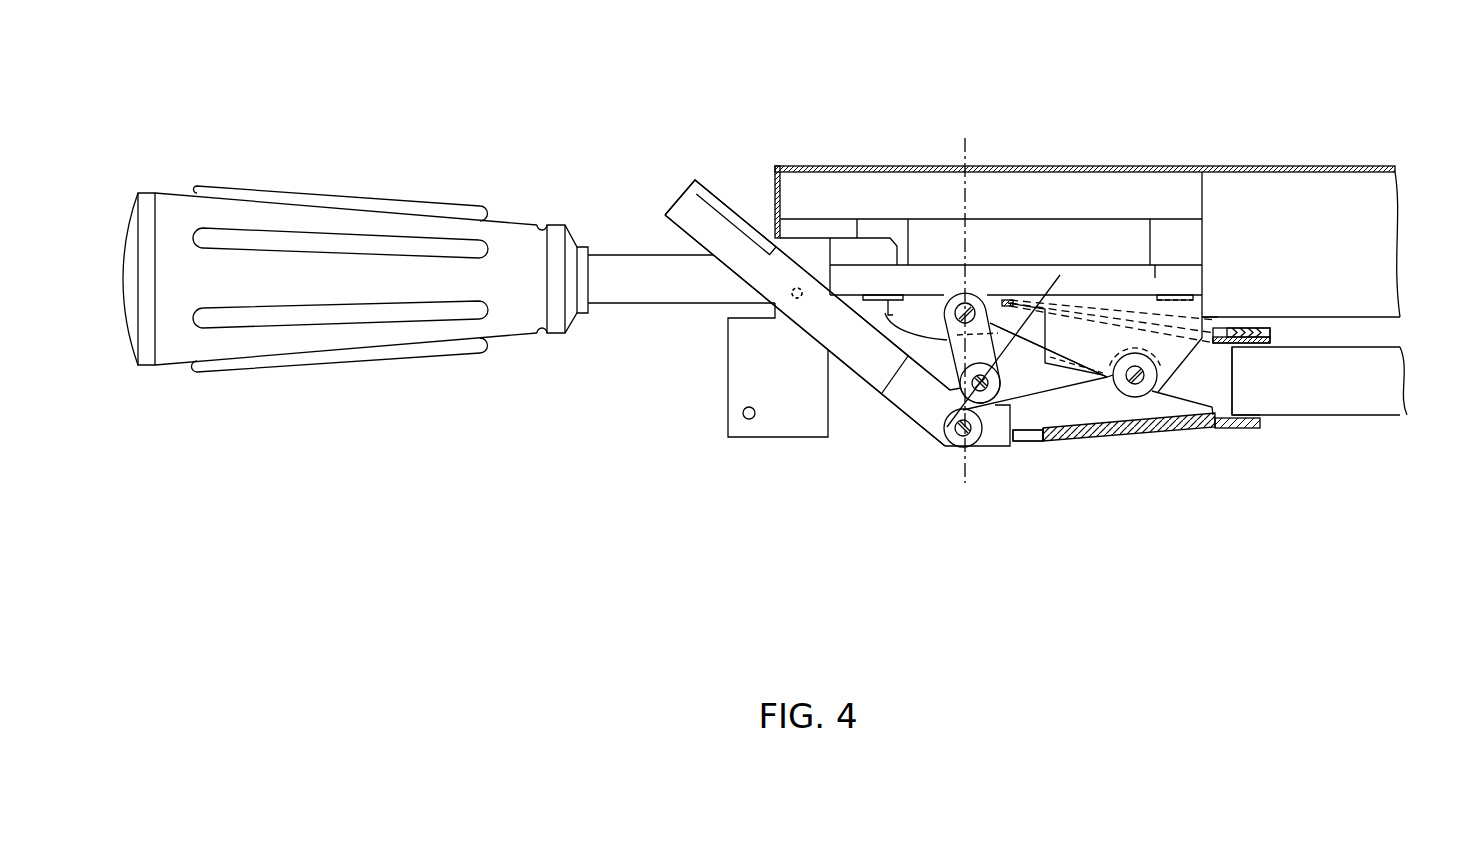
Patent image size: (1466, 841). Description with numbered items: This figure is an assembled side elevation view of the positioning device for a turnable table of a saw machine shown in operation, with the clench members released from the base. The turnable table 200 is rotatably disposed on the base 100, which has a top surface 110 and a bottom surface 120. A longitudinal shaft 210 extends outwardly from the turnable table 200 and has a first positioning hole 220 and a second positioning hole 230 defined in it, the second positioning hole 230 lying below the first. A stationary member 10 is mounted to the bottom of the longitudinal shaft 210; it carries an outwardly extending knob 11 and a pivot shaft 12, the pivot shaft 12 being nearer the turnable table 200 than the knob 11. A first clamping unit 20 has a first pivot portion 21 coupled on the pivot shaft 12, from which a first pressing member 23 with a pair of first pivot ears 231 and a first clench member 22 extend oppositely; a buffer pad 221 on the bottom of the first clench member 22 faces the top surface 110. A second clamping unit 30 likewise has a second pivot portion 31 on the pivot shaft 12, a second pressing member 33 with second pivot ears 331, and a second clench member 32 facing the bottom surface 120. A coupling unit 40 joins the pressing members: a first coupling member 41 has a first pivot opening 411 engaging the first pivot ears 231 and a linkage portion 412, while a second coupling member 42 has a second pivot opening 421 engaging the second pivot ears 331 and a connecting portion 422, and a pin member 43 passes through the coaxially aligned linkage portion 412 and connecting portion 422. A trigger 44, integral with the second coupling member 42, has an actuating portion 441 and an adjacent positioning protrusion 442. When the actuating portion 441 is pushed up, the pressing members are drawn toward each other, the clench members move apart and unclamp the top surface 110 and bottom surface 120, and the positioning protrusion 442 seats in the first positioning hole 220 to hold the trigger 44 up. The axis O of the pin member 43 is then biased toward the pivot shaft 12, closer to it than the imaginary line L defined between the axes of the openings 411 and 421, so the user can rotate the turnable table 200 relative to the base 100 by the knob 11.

The knob 11 is at (401, 222).
The second positioning hole 230 is at (751, 420).
The coupling unit 40 is at (884, 416).
The trigger 44 is at (716, 176).
The actuating portion 441 is at (757, 228).
The positioning protrusion 442 is at (801, 288).
The first positioning hole 220 is at (797, 293).
The second coupling member 42 is at (915, 415).
The second pivot opening 421 is at (948, 445).
The linkage portion 412 is at (1063, 443).
The connecting portion 422 is at (1028, 435).
The first pivot opening 411 is at (965, 295).
The first coupling member 41 is at (890, 315).
The pin member 43 is at (990, 395).
The second pivot ears 331 is at (988, 440).
The second pressing member 33 is at (1035, 443).
The first pivot portion 21 is at (1165, 395).
The second pivot portion 31 is at (1048, 350).
The pivot shaft 12 is at (1145, 397).
The first pressing member 23 is at (1045, 295).
The first pivot ears 231 is at (1008, 300).
The axis of the pin member O is at (1060, 275).
The imaginary line L is at (968, 297).
The stationary member 10 is at (1101, 266).
The longitudinal shaft 210 is at (1000, 293).
The turnable table 200 is at (1356, 192).
The first clamping unit 20 is at (1216, 318).
The first clench member 22 is at (1270, 336).
The buffer pad 221 is at (1278, 328).
The base 100 is at (1361, 424).
The top surface 110 is at (1252, 364).
The bottom surface 120 is at (1258, 418).
The second clamping unit 30 is at (1106, 452).
The second clench member 32 is at (1250, 428).